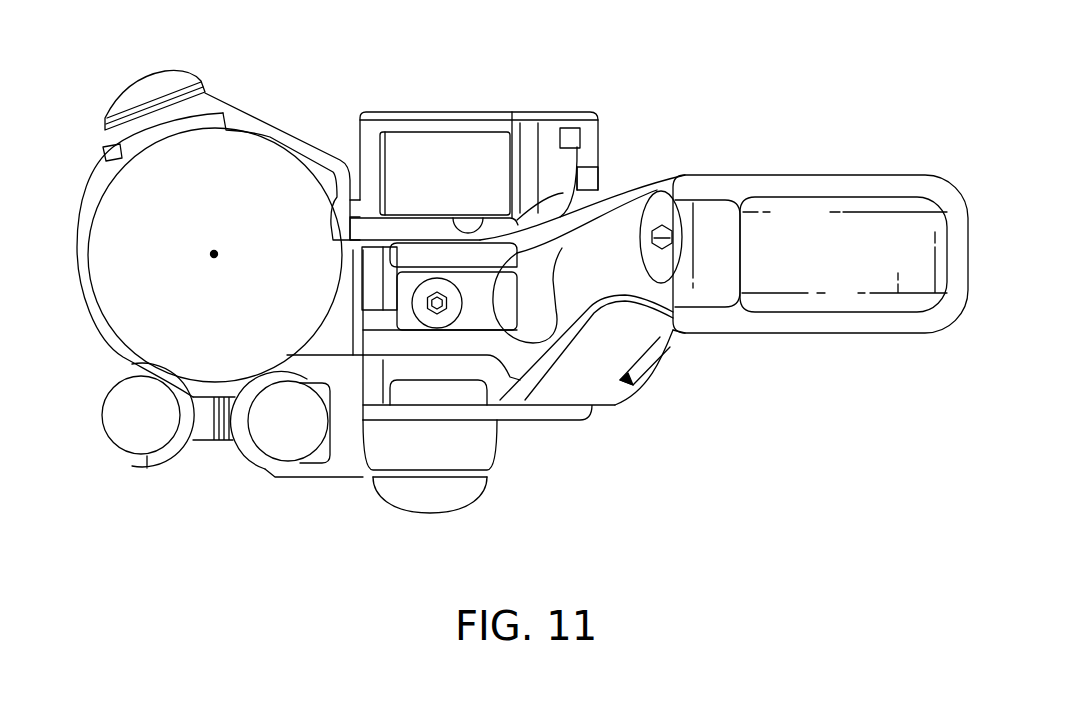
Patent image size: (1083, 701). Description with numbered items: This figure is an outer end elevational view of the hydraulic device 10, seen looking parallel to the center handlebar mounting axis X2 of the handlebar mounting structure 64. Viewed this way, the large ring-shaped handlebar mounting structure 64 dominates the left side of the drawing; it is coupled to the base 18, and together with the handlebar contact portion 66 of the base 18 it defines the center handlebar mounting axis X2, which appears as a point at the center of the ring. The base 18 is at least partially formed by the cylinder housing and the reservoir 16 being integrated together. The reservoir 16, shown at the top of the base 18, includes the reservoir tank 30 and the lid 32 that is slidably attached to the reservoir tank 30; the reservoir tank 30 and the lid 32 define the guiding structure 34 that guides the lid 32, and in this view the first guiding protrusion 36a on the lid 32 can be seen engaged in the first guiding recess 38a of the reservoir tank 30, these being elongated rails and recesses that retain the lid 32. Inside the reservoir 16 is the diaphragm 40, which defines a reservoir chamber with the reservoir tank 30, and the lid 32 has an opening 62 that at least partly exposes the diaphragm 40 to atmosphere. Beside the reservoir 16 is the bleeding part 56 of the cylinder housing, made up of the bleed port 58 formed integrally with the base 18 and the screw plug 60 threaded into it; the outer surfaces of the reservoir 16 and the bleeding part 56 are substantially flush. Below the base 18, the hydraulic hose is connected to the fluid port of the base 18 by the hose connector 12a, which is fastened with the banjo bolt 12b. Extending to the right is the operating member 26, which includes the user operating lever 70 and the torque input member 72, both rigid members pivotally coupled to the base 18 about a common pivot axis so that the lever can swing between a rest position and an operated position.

The hydraulic device 10 is at (850, 86).
The hose connector 12a is at (497, 447).
The banjo bolt 12b is at (432, 514).
The reservoir 16 is at (588, 116).
The base 18 is at (346, 365).
The operating member 26 is at (888, 342).
The reservoir tank 30 is at (547, 122).
The lid 32 is at (577, 118).
The guiding structure 34 is at (556, 190).
The first guiding protrusion 36a is at (587, 168).
The first guiding recess 38a is at (560, 235).
The diaphragm 40 is at (577, 140).
The bleeding part 56 is at (455, 133).
The bleed port 58 is at (345, 127).
The screw plug 60 is at (437, 118).
The opening 62 is at (595, 128).
The handlebar mounting structure 64 is at (250, 100).
The handlebar contact portion 66 is at (310, 333).
The user operating lever 70 is at (718, 175).
The torque input member 72 is at (397, 310).
The center handlebar mounting axis X2 is at (212, 252).